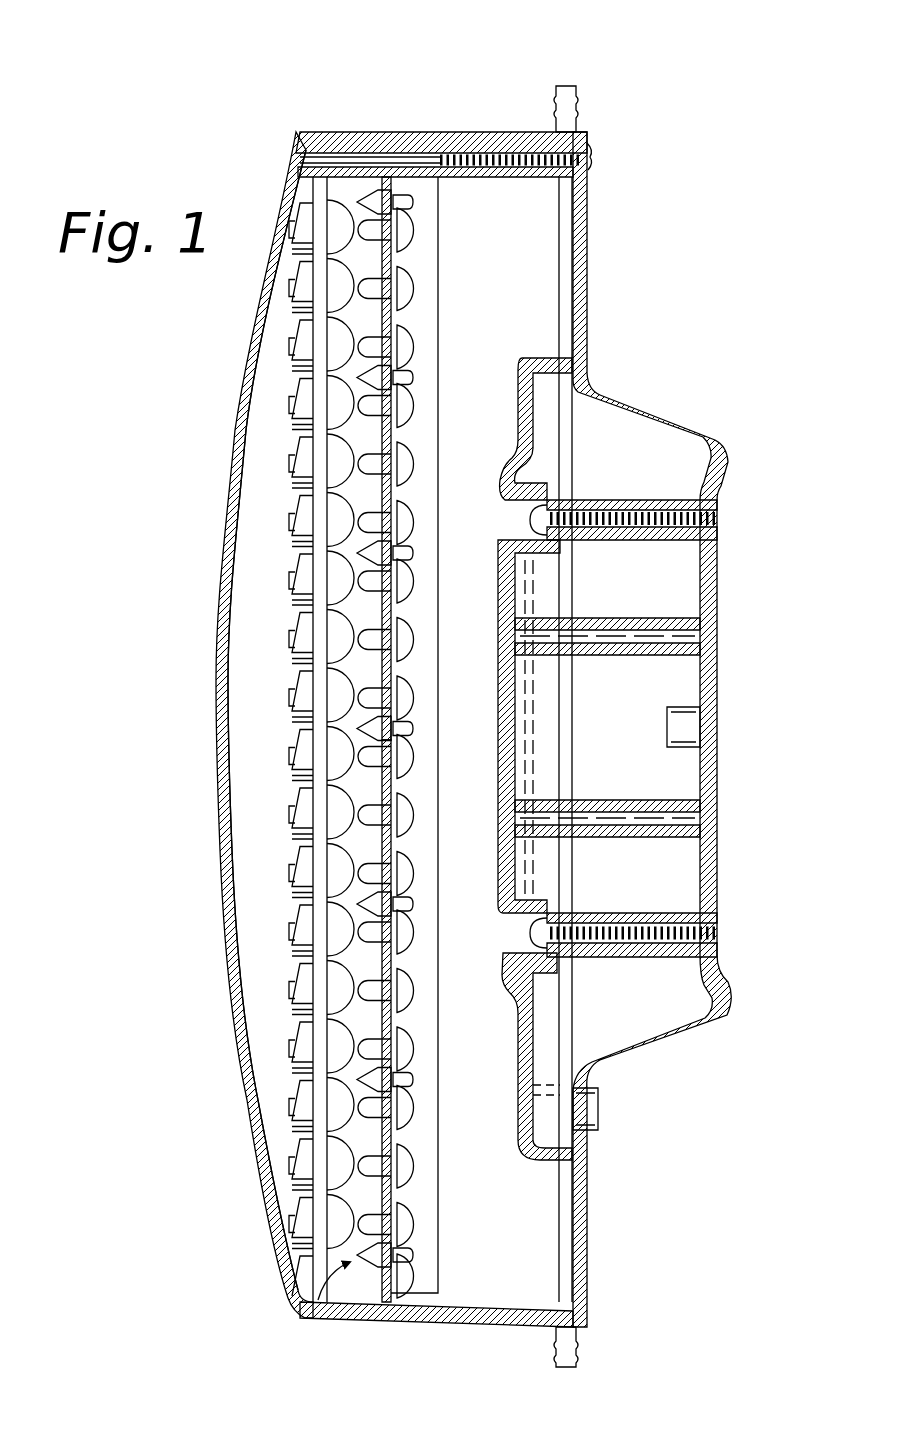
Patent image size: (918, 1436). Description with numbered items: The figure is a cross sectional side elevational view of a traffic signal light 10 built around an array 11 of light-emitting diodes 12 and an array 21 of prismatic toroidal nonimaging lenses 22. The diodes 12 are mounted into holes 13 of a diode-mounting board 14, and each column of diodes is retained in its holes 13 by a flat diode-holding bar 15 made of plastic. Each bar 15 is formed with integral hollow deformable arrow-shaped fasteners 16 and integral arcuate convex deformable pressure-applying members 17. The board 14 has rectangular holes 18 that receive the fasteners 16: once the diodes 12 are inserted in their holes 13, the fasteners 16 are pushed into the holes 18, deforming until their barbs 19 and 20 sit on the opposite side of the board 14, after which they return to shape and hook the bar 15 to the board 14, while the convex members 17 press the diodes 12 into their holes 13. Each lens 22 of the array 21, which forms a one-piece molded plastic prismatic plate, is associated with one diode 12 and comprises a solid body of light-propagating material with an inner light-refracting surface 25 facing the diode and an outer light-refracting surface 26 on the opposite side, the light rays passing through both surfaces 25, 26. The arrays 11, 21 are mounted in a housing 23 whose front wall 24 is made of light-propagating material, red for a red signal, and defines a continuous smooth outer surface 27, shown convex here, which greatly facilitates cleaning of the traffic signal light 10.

The traffic signal light 10 is at (659, 117).
The array of light-emitting diodes 11 is at (292, 1305).
The light-emitting diode 12 is at (367, 226).
The hole 13 is at (386, 277).
The diode-mounting board 14 is at (387, 842).
The flat diode-holding bar 15 is at (420, 1213).
The hollow deformable arrow-shaped fastener 16 is at (380, 560).
The arcuate convex deformable pressure-applying member 17 is at (398, 757).
The rectangular hole 18 is at (364, 380).
The barb 19 is at (398, 1050).
The barb 20 is at (388, 1108).
The array of prismatic toroidal nonimaging lenses 21 is at (305, 490).
The prismatic toroidal nonimaging lens 22 is at (305, 655).
The housing 23 is at (487, 125).
The front wall 24 is at (226, 896).
The inner light-refracting surface 25 is at (345, 684).
The outer light-refracting surface 26 is at (305, 770).
The continuous smooth outer surface 27 is at (232, 999).